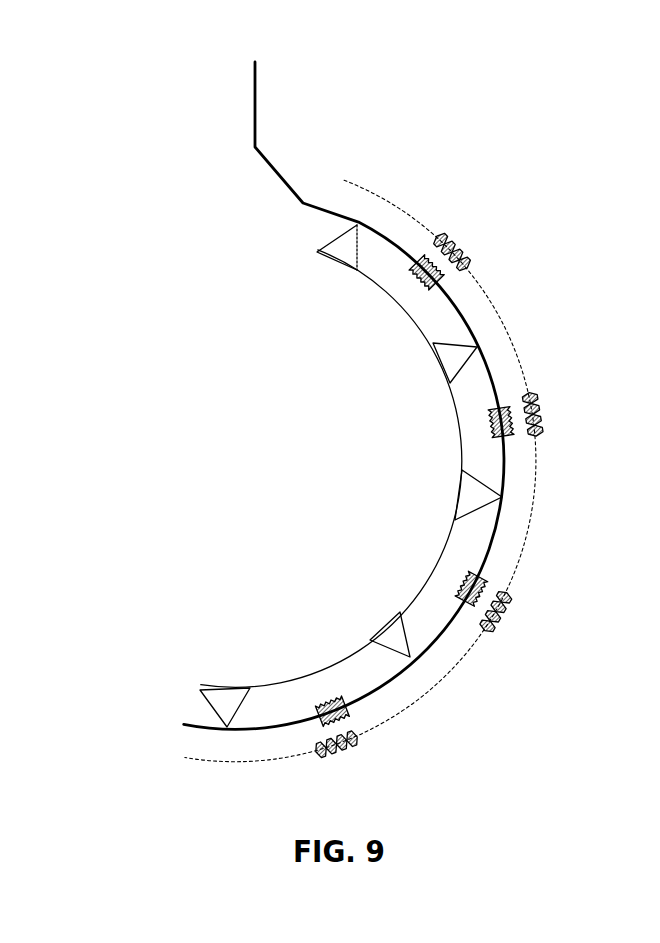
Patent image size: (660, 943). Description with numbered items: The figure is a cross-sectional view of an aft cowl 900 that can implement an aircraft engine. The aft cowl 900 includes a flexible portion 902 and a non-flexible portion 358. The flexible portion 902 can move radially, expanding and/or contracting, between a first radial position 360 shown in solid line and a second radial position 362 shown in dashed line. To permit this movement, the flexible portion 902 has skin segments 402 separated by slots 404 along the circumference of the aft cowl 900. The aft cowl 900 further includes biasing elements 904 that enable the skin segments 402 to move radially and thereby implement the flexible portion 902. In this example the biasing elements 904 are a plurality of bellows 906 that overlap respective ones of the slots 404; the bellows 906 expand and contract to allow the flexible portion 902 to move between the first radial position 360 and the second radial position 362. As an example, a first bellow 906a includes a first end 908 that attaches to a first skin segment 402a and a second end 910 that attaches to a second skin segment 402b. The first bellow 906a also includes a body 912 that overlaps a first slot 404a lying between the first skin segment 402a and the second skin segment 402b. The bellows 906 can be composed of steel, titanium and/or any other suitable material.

The aft cowl 900 is at (165, 55).
The non-flexible portion 358 is at (267, 160).
The first radial position 360 is at (400, 238).
The second radial position 362 is at (480, 664).
The skin segments 402 is at (508, 326).
The first skin segment 402a is at (260, 728).
The second skin segment 402b is at (393, 672).
The slots 404 is at (512, 437).
The first slot 404a is at (355, 695).
The flexible portion 902 is at (550, 234).
The biasing elements 904 is at (492, 415).
The bellows 906 is at (423, 284).
The first bellow 906a is at (317, 688).
The first end 908 is at (318, 252).
The second end 910 is at (433, 291).
The body 912 is at (462, 578).